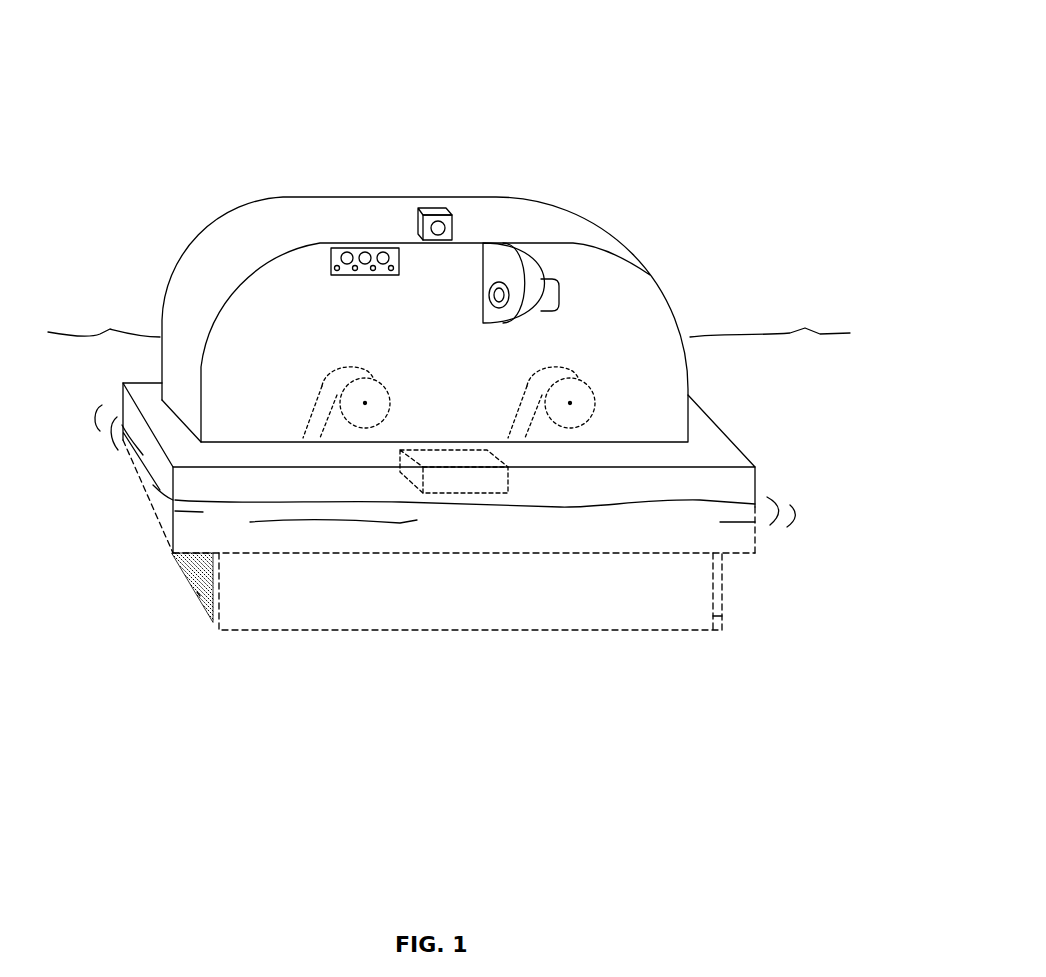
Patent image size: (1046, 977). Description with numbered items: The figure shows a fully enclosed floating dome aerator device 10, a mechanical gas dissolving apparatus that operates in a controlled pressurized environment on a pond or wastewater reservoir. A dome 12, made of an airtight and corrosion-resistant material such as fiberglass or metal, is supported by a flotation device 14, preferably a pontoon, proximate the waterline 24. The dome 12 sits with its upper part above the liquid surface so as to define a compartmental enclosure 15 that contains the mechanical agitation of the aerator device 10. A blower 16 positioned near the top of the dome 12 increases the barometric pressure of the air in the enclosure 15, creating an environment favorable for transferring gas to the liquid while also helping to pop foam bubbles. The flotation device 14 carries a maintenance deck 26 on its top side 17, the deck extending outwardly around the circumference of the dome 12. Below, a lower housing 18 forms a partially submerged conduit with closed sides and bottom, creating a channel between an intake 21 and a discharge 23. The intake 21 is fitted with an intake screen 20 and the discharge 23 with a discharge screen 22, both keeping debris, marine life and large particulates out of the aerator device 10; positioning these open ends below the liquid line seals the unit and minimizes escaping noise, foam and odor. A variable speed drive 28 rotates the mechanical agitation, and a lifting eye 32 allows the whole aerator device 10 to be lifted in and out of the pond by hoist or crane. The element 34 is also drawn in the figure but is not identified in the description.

The amphibious robotic vehicle 10 is at (720, 103).
The dome 12 is at (382, 214).
The hull platform 14 is at (757, 487).
The inside of dome 15 is at (618, 320).
The camera 16 is at (540, 267).
The upper deck surface 17 is at (722, 450).
The submerged lower housing 18 is at (440, 605).
The propulsion unit 20 is at (197, 592).
The thruster intake region 21 is at (168, 582).
The bottom of lower housing 22 is at (718, 616).
The submerged portion 23 is at (757, 588).
The water surface 24 is at (90, 416).
The platform edge 26 is at (148, 390).
The wheels 28 is at (533, 390).
The light 32 is at (432, 208).
The battery compartment 34 is at (462, 494).